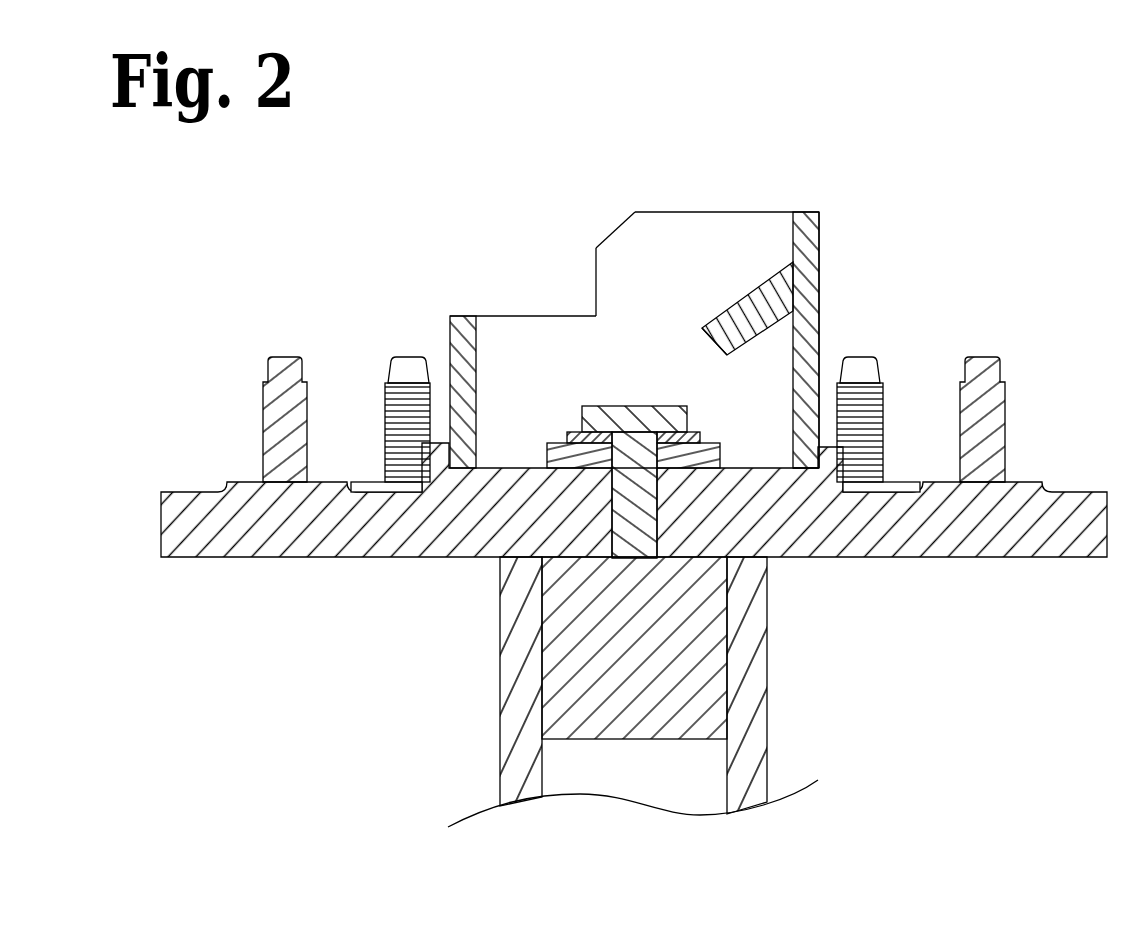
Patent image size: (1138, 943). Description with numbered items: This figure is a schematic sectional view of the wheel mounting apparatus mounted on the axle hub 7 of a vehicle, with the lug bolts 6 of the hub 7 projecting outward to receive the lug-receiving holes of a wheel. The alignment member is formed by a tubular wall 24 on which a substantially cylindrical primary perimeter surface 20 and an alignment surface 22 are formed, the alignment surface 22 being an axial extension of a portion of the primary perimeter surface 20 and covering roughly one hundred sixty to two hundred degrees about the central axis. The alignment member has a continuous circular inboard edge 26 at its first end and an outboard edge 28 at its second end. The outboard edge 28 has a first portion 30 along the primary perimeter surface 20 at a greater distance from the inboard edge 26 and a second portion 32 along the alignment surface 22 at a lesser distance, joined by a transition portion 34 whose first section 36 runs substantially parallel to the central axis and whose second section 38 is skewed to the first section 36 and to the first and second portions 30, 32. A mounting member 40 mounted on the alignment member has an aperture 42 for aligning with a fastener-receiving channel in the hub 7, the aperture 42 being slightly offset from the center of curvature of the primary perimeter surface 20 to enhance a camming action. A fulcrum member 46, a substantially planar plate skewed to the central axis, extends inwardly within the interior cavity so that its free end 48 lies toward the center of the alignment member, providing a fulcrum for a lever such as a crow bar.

The lug bolts 6 is at (992, 447).
The axle hub 7 is at (413, 518).
The primary perimeter surface 20 is at (636, 398).
The alignment surface 22 is at (820, 240).
The tubular wall 24 is at (810, 283).
The inboard edge 26 is at (803, 468).
The outboard edge 28 is at (595, 292).
The first portion 30 is at (463, 317).
The second portion 32 is at (807, 212).
The transition portion 34 is at (515, 316).
The first section 36 is at (595, 263).
The second section 38 is at (620, 227).
The mounting member 40 is at (720, 457).
The aperture 42 is at (607, 467).
The fulcrum member 46 is at (747, 290).
The free end 48 is at (706, 342).